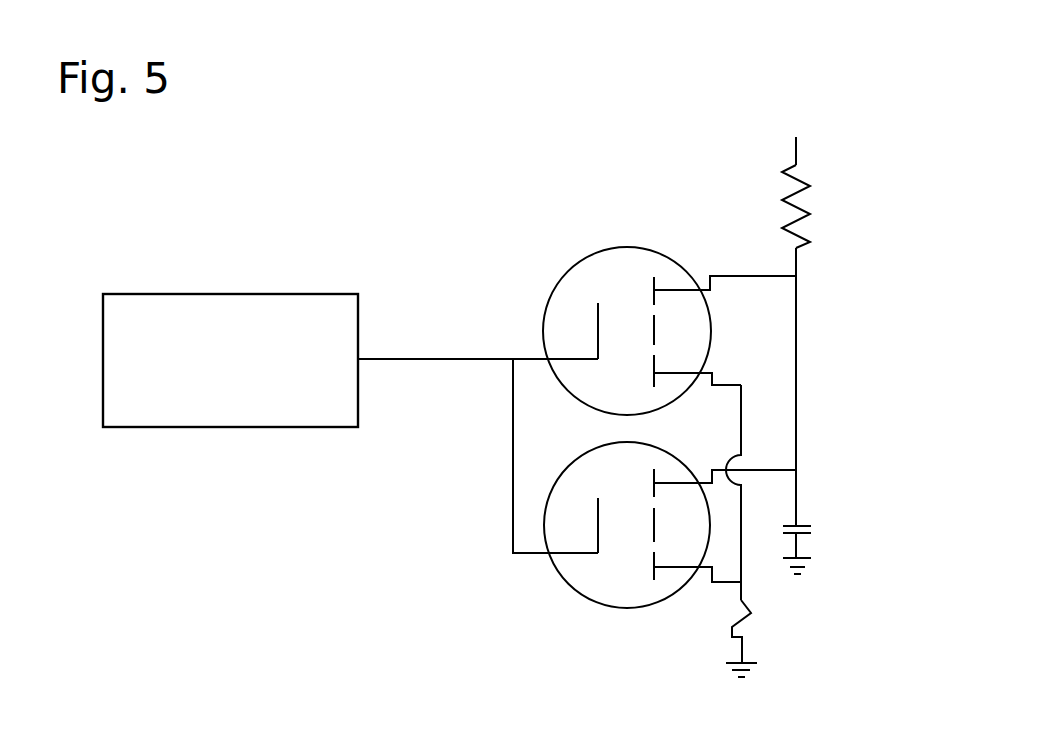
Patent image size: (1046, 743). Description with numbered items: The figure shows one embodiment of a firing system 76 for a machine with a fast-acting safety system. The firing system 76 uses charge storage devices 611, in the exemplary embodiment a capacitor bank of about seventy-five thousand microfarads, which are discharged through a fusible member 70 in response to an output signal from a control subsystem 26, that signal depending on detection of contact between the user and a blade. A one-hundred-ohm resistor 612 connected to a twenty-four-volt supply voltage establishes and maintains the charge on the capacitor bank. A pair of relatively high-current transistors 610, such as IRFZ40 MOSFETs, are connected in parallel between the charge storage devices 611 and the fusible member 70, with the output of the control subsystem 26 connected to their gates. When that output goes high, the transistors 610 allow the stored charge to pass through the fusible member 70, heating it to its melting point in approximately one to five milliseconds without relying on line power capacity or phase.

The firing system 76 is at (441, 169).
The control subsystem 26 is at (218, 428).
The transistors 610 is at (600, 250).
The resistor 612 is at (807, 188).
The charge storage devices 611 is at (805, 522).
The fusible member 70 is at (750, 614).